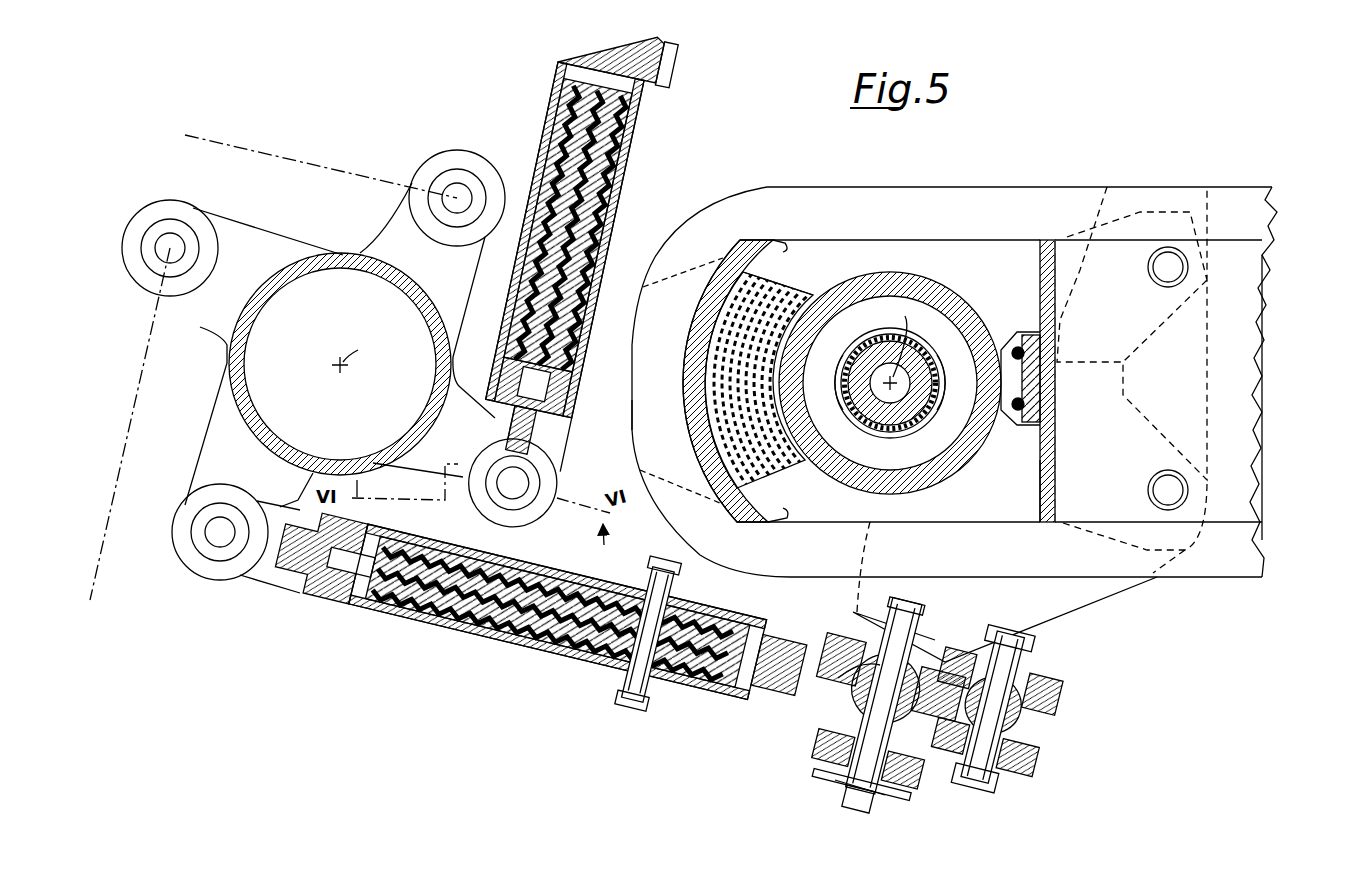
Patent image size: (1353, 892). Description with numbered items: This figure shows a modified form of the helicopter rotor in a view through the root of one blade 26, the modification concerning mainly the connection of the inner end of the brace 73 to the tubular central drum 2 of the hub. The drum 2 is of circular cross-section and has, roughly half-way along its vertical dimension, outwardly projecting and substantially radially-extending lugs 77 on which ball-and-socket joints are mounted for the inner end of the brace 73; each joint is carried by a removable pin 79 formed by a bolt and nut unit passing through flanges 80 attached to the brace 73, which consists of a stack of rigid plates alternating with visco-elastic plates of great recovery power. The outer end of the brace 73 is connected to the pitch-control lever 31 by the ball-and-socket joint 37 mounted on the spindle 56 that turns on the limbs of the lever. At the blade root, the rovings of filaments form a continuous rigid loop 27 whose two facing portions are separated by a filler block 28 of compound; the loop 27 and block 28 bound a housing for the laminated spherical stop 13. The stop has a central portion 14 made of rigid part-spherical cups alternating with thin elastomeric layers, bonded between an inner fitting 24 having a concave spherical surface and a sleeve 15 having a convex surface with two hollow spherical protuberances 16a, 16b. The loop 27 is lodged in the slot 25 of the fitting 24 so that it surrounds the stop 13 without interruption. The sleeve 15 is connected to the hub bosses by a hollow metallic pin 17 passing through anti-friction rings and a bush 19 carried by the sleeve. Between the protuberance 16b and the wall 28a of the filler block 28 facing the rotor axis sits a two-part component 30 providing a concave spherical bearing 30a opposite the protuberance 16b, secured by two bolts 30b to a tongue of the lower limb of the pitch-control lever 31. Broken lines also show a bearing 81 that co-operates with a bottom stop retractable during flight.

The tubular central drum 2 is at (403, 448).
The laminated spherical stop 13 is at (782, 290).
The central portion of the stop 14 is at (787, 470).
The sleeve 15 is at (972, 296).
The protuberance 16a is at (790, 378).
The protuberance 16b is at (990, 372).
The hollow metallic pin 17 is at (905, 412).
The bush 19 is at (850, 420).
The inner fitting 24 is at (713, 293).
The slot 25 is at (632, 443).
The blade 26 is at (1265, 160).
The loop of rovings of filaments 27 is at (793, 187).
The filler block 28 is at (1243, 355).
The wall of the filler block 28a is at (1040, 462).
The two-part component 30 is at (1060, 405).
The concave spherical bearing 30a is at (1045, 360).
The bolts 30b is at (1048, 430).
The pitch-control lever 31 is at (1048, 618).
The ball-and-socket joint 37 is at (857, 700).
The spindle 56 is at (847, 770).
The brace 73 is at (520, 605).
The lugs 77 is at (215, 465).
The removable pin 79 is at (215, 540).
The flanges 80 is at (302, 570).
The bearing 81 is at (1140, 342).